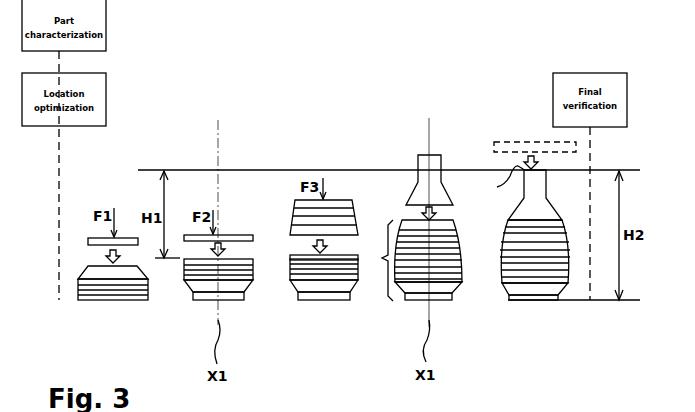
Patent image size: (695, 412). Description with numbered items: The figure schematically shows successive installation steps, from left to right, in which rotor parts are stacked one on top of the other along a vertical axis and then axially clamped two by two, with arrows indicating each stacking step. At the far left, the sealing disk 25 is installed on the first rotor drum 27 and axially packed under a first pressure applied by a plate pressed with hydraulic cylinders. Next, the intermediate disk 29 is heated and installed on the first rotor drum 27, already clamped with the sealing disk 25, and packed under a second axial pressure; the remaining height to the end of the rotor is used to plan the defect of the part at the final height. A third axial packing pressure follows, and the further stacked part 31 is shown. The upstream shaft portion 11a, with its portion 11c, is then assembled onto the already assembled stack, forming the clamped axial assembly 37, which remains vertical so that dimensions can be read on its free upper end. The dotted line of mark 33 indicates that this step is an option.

The upstream shaft portion 11a is at (436, 178).
The flange of blank 11c is at (497, 181).
The sealing disk 25 is at (125, 237).
The first rotor drum 27 is at (78, 286).
The intermediate disk 29 is at (235, 234).
The stacked preform 31 is at (327, 207).
The optional step mark 33 is at (512, 137).
The clamped axial assembly 37 is at (494, 276).